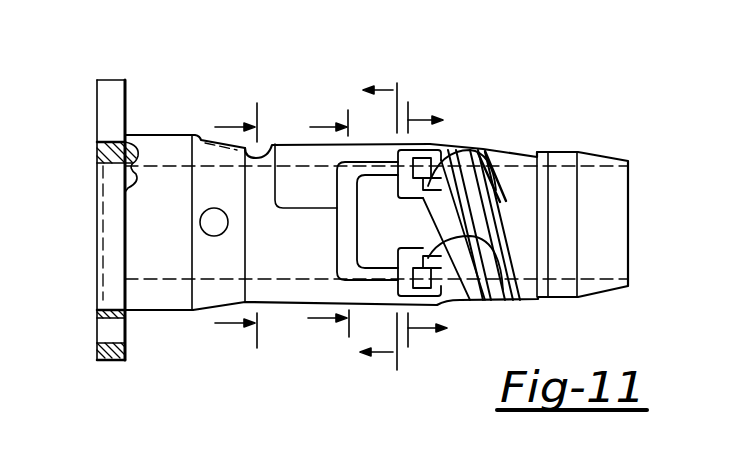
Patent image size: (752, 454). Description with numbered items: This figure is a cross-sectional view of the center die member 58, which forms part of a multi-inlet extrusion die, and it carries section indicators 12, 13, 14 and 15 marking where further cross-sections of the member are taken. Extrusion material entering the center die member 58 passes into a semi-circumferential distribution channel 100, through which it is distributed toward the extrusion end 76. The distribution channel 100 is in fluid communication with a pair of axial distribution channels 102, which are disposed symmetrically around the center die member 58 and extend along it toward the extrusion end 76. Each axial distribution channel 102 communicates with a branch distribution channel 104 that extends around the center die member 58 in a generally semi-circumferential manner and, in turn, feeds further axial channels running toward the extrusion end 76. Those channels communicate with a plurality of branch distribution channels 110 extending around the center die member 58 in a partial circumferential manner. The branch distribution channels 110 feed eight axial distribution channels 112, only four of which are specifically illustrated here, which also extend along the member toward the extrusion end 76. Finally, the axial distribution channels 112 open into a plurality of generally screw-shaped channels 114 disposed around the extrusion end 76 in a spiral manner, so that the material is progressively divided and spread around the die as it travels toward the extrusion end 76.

The center die member 58 is at (540, 96).
The extrusion end 76 is at (531, 156).
The semi-circumferential distribution channel 100 is at (200, 136).
The axial distribution channel 102 is at (303, 228).
The branch distribution channel 104 is at (350, 196).
The branch distribution channel 110 is at (452, 148).
The axial distribution channel 112 is at (442, 150).
The screw-shaped channel 114 is at (478, 152).
The section line for FIG. 12 is at (368, 224).
The section line for FIG. 13 is at (432, 228).
The section line for FIG. 14 is at (323, 226).
The section line for FIG. 15 is at (228, 227).